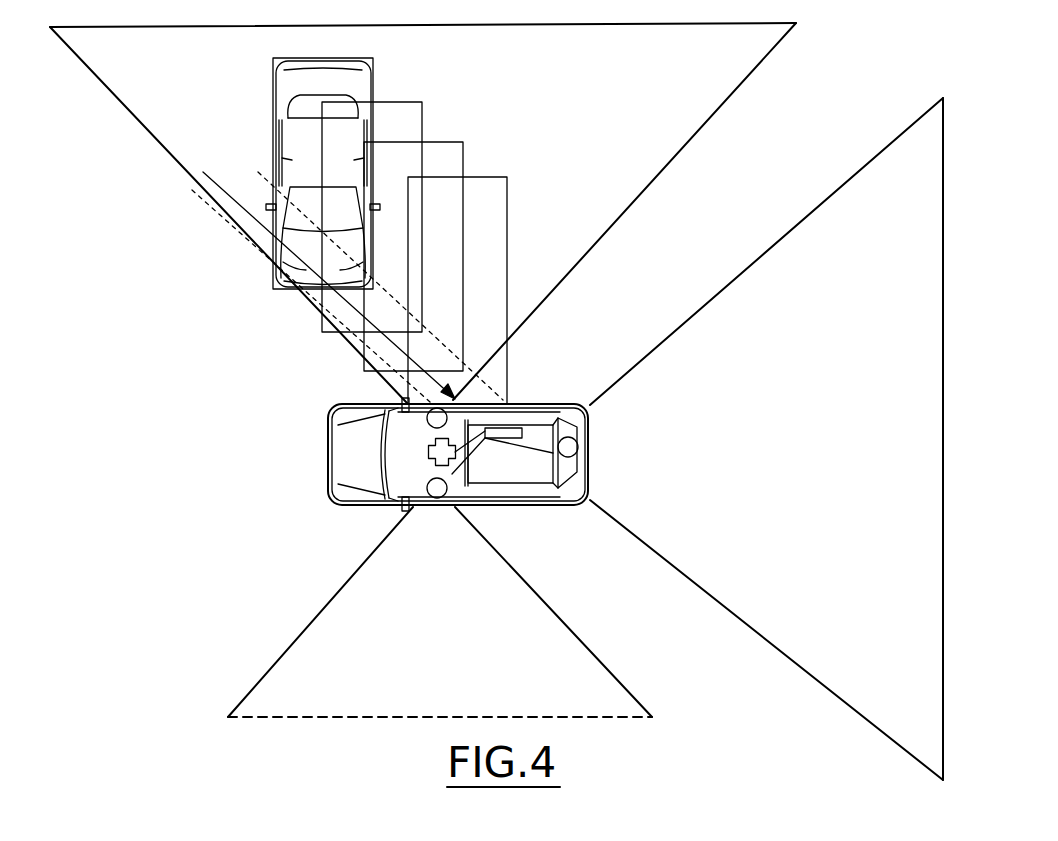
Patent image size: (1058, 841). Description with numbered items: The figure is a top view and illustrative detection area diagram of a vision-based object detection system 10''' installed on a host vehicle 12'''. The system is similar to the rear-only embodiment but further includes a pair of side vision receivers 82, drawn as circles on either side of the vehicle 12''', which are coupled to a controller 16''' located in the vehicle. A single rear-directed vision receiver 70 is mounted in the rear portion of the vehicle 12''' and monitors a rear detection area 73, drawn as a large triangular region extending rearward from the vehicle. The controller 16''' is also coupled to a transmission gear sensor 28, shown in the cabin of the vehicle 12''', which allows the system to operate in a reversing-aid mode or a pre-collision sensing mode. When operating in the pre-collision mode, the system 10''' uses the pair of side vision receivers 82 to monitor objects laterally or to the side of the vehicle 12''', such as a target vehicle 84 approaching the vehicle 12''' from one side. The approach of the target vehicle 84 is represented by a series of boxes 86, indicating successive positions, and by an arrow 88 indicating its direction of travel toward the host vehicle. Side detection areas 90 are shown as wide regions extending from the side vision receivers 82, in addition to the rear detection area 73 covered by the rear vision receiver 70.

The vision-based detection system 10''' is at (586, 543).
The host vehicle 12''' is at (423, 457).
The controller 16''' is at (526, 406).
The transmission gear sensor 28 is at (428, 452).
The vision receiver 70 is at (578, 460).
The rear detection area 73 is at (765, 255).
The side vision receivers 82 is at (383, 405).
The target vehicle 84 is at (273, 75).
The boxes 86 is at (373, 65).
The arrow 88 is at (243, 208).
The side detection areas 90 is at (677, 156).